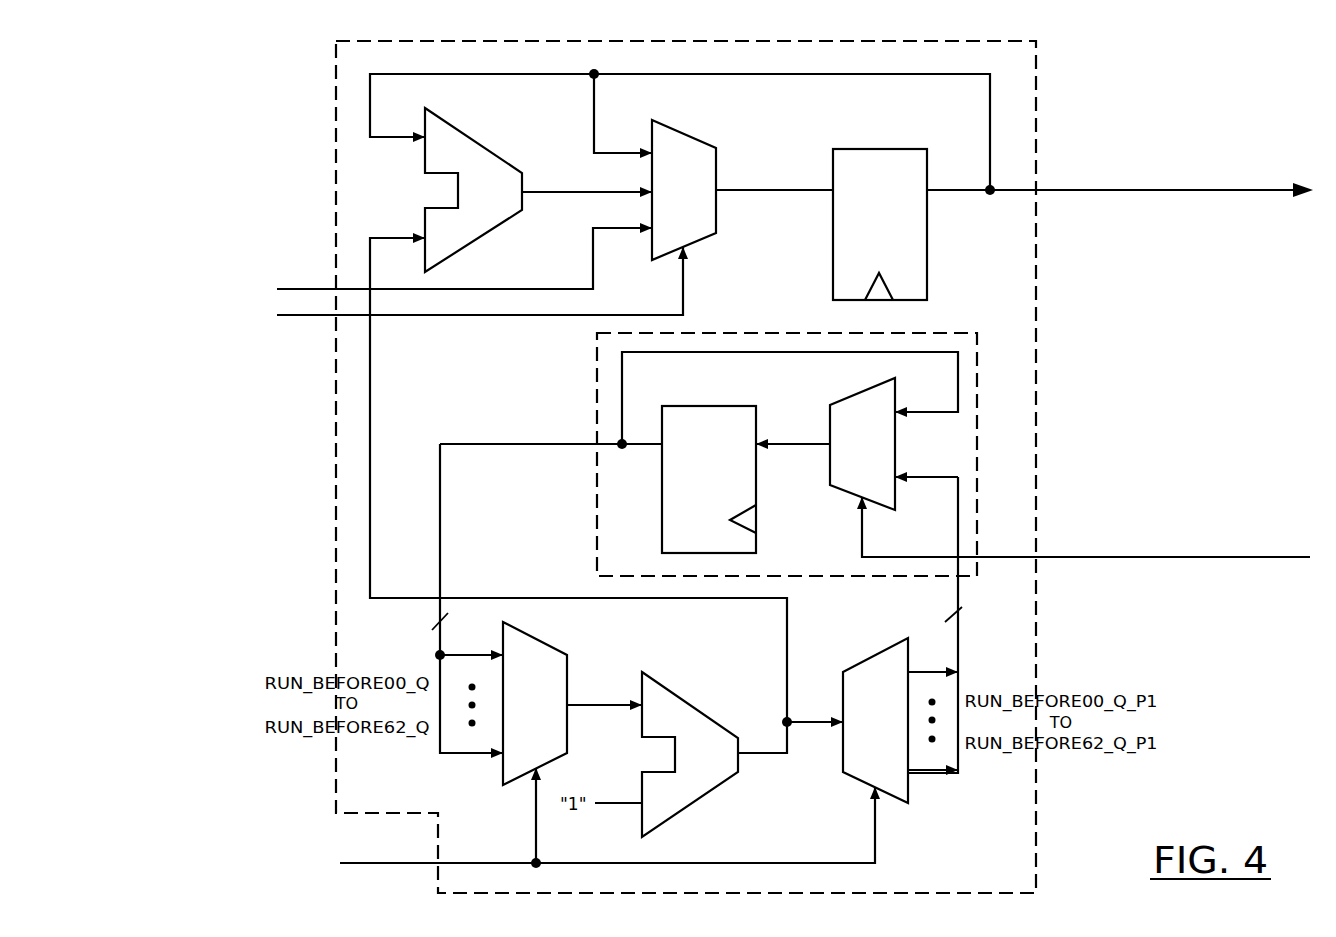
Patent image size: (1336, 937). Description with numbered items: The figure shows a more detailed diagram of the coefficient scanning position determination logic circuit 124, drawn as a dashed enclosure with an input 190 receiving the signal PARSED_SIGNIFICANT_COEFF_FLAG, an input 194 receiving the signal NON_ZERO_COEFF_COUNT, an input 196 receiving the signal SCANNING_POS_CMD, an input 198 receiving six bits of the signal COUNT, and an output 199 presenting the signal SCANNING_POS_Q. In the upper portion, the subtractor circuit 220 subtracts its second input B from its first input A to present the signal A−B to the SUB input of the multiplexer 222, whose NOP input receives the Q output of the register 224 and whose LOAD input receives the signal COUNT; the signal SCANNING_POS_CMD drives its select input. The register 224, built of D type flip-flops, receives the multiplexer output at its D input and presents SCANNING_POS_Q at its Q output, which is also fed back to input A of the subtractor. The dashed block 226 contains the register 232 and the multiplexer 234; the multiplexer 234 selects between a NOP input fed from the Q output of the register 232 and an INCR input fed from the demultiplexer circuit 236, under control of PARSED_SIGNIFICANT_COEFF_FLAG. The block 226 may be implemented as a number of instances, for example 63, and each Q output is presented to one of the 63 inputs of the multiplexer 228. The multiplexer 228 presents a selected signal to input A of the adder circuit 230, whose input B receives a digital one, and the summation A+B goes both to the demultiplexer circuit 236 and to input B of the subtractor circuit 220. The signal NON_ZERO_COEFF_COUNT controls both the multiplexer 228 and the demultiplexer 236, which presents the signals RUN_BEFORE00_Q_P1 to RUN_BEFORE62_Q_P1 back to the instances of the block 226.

The coefficient scanning position determination logic circuit 124 is at (400, 40).
The subtractor circuit 220 is at (462, 130).
The multiplexer 222 is at (680, 130).
The register 224 is at (892, 148).
The circuit 226 is at (717, 333).
The register 232 is at (725, 405).
The multiplexer 234 is at (873, 385).
The multiplexer 228 is at (538, 630).
The adder circuit 230 is at (675, 692).
The demultiplexer circuit 236 is at (878, 650).
The input 198 is at (335, 286).
The input 196 is at (335, 319).
The output 199 is at (1038, 192).
The input 190 is at (1038, 560).
The input 194 is at (438, 864).
The number of instances 63 is at (708, 621).